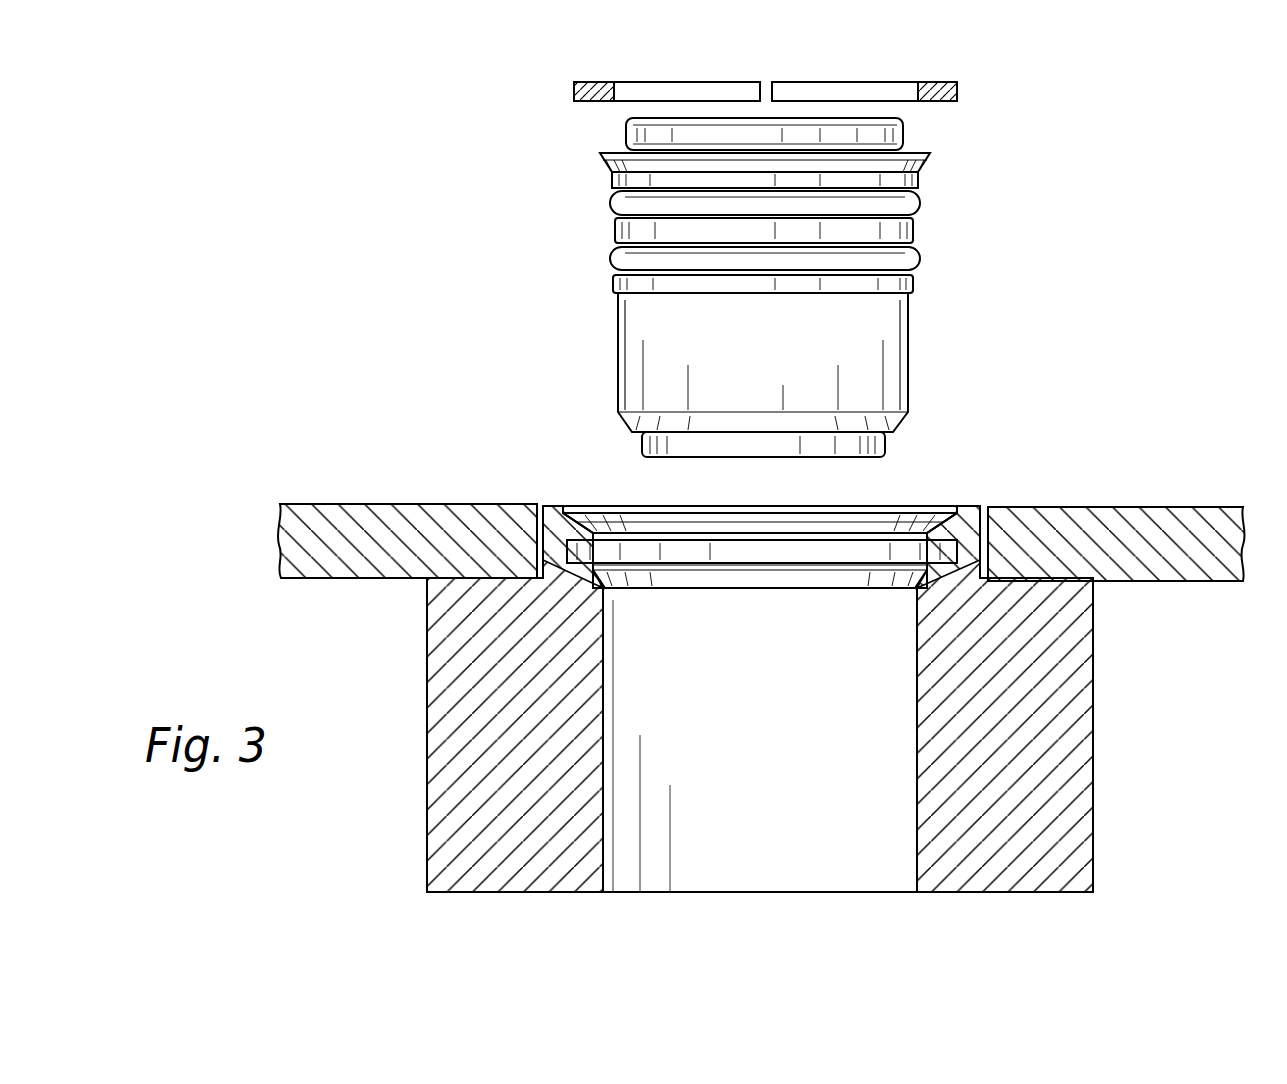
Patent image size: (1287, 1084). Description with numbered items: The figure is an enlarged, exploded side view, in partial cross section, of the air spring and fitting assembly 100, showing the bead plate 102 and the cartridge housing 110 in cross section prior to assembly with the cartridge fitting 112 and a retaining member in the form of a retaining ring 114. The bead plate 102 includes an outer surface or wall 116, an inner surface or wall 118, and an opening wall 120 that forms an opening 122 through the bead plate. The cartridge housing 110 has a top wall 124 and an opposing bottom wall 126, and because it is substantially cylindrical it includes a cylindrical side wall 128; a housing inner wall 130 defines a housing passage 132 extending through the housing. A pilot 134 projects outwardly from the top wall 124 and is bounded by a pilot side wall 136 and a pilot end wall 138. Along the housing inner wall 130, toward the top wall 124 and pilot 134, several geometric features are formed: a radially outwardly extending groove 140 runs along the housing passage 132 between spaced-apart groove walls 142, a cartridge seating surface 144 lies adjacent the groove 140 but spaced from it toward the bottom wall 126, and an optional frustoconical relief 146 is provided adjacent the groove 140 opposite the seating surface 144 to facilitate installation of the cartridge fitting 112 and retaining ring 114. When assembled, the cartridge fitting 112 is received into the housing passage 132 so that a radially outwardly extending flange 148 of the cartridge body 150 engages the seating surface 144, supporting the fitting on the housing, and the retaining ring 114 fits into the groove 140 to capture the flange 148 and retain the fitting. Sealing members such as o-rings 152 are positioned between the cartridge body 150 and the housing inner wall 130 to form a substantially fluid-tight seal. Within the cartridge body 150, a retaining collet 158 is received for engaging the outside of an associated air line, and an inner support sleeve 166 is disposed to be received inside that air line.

The air spring and fitting assembly 100 is at (397, 233).
The bead plate 102 is at (769, 521).
The cartridge housing 110 is at (789, 678).
The cartridge fitting 112 is at (797, 282).
The retaining ring 114 is at (957, 92).
The outer surface or wall 116 is at (372, 504).
The inner surface or wall 118 is at (1170, 583).
The opening wall 120 is at (988, 558).
The opening 122 is at (987, 499).
The top wall 124 is at (500, 582).
The bottom wall 126 is at (505, 892).
The cylindrical side wall 128 is at (1093, 692).
The housing inner wall 130 is at (913, 815).
The housing passage 132 is at (718, 781).
The pilot 134 is at (540, 531).
The pilot side wall 136 is at (548, 556).
The pilot end wall 138 is at (548, 505).
The groove 140 is at (895, 551).
The groove walls 142 is at (745, 556).
The cartridge seating surface 144 is at (592, 595).
The frustoconical relief 146 is at (592, 506).
The flange 148 is at (603, 161).
The cartridge body 150 is at (650, 348).
The o-rings 152 is at (920, 203).
The retaining collet 158 is at (903, 137).
The inner support sleeve 166 is at (817, 427).